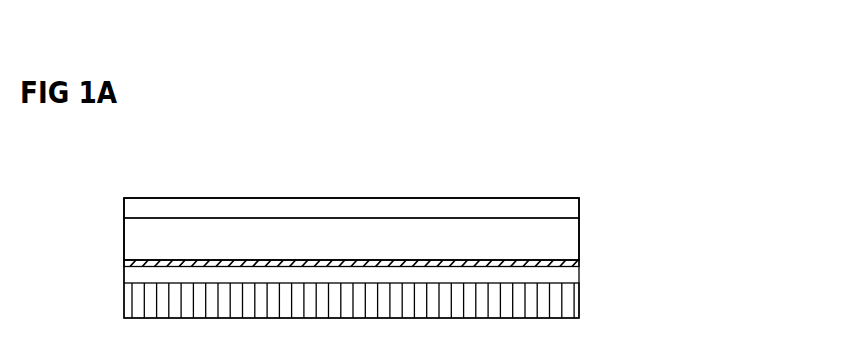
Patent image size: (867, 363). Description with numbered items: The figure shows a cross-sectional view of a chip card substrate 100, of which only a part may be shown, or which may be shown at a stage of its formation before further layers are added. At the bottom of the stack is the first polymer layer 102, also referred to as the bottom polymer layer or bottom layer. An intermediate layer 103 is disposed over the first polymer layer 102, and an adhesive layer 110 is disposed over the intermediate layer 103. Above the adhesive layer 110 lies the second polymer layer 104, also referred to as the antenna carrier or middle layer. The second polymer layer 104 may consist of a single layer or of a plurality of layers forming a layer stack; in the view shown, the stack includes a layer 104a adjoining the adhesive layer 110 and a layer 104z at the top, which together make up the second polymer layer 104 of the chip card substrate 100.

The chip card substrate 100 is at (735, 103).
The first polymer layer 102 is at (573, 299).
The intermediate layer 103 is at (130, 268).
The second polymer layer 104 is at (718, 183).
The layer of the plurality of layers 104a is at (573, 238).
The layer of the plurality of layers 104z is at (580, 203).
The adhesive layer 110 is at (578, 263).